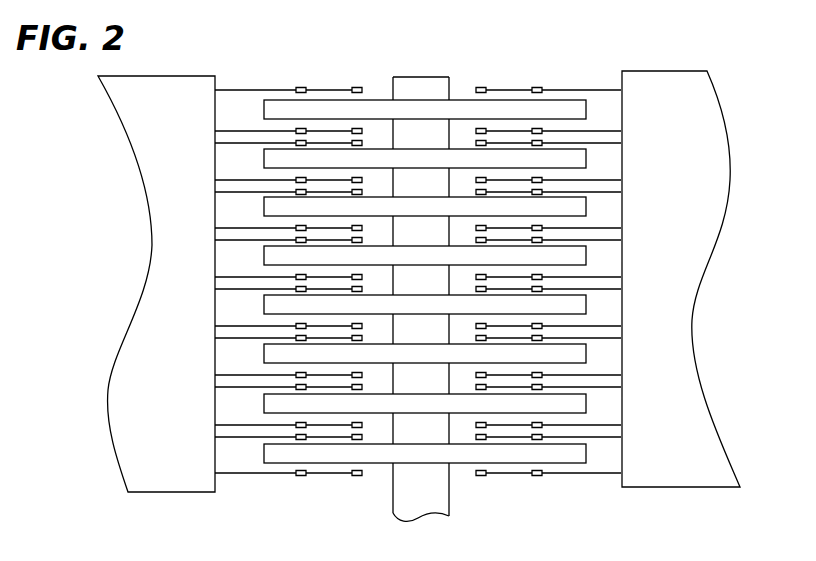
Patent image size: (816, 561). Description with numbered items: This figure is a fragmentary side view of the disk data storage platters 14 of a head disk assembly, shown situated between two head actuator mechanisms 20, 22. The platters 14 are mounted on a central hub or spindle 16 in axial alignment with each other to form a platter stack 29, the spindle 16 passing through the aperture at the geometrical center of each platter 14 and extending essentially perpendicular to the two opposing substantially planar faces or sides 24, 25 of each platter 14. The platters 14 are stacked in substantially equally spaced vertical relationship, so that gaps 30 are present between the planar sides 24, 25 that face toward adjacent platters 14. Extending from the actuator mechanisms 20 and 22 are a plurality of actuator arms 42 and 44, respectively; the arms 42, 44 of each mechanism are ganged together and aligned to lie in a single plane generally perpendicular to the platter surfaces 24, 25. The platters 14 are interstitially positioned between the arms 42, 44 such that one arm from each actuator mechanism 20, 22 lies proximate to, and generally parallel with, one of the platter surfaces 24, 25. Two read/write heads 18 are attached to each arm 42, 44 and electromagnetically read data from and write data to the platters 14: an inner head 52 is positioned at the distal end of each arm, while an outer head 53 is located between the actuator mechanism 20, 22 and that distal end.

The platter stack 29 is at (282, 84).
The spindle 16 is at (448, 83).
The planar face 24 is at (573, 88).
The planar face 25 is at (575, 121).
The head actuator mechanism 20 is at (707, 157).
The head actuator mechanism 22 is at (150, 182).
The gap 30 is at (275, 247).
The inner head 52 is at (300, 178).
The outer head 53 is at (357, 178).
The disk data storage platter 14 is at (587, 347).
The read/write head 18 is at (357, 342).
The actuator arm 42 is at (510, 435).
The actuator arm 44 is at (330, 435).